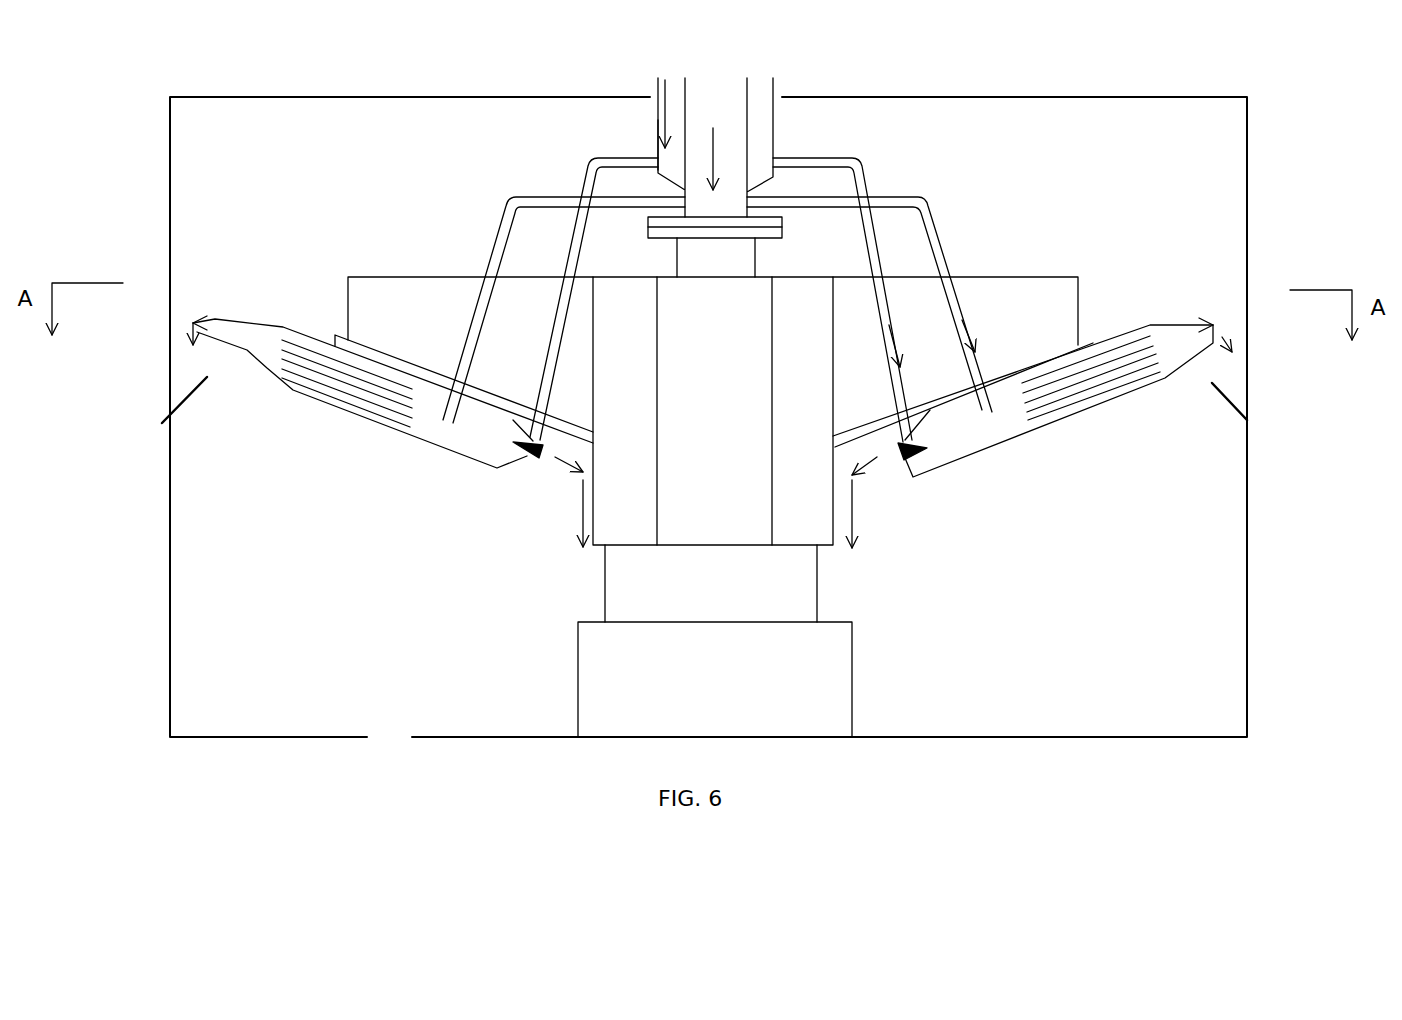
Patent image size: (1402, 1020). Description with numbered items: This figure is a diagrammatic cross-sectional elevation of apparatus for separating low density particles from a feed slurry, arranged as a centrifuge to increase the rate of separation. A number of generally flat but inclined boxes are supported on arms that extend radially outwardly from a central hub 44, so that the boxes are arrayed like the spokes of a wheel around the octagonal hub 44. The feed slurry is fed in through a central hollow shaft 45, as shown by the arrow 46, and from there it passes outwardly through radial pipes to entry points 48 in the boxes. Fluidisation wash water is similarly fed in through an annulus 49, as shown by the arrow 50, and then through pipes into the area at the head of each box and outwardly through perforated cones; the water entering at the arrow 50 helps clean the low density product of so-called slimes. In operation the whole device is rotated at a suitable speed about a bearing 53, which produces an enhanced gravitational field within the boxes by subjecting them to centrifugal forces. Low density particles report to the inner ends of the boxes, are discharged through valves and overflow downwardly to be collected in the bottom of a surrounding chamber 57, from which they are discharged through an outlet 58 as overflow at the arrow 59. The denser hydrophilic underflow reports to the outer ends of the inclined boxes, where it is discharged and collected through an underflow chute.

The central hub 44 is at (713, 411).
The central hollow shaft 45 is at (748, 77).
The arrow 46 is at (713, 144).
The entry points 48 is at (440, 410).
The annulus 49 is at (650, 90).
The arrow 50 is at (669, 128).
The bearing 53 is at (715, 679).
The surrounding chamber 57 is at (953, 738).
The outlet 58 is at (388, 700).
The arrow 59 is at (388, 740).